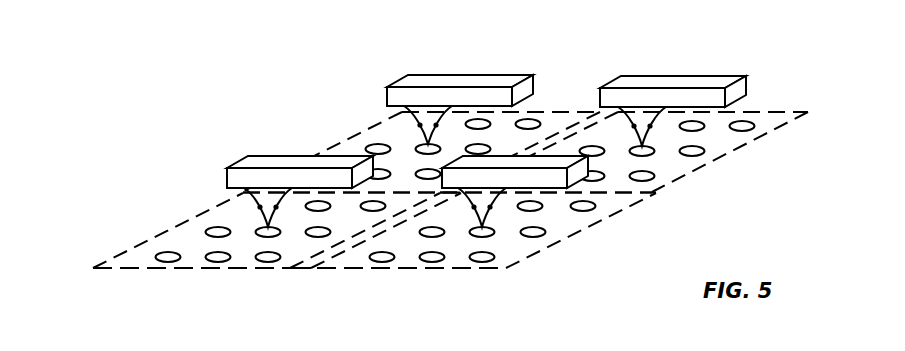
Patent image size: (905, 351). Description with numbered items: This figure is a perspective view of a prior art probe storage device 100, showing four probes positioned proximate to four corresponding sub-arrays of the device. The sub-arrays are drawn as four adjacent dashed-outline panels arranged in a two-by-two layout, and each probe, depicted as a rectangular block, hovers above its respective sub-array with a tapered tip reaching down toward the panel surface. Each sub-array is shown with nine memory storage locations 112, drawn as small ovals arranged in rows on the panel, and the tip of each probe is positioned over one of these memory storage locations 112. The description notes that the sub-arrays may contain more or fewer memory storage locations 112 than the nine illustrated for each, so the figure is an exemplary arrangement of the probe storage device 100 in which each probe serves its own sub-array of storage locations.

The probe storage device 100 is at (170, 44).
The memory storage location 112 is at (374, 261).